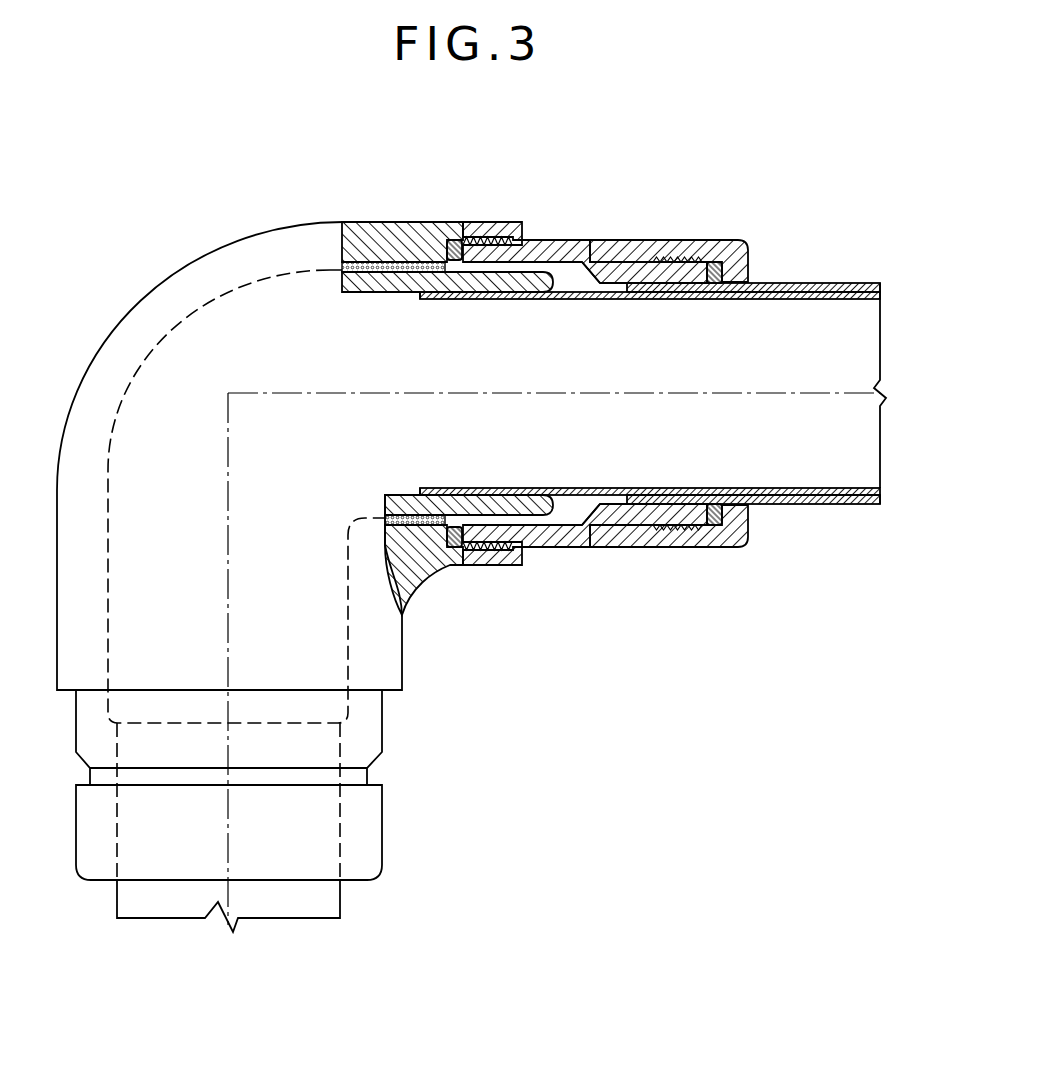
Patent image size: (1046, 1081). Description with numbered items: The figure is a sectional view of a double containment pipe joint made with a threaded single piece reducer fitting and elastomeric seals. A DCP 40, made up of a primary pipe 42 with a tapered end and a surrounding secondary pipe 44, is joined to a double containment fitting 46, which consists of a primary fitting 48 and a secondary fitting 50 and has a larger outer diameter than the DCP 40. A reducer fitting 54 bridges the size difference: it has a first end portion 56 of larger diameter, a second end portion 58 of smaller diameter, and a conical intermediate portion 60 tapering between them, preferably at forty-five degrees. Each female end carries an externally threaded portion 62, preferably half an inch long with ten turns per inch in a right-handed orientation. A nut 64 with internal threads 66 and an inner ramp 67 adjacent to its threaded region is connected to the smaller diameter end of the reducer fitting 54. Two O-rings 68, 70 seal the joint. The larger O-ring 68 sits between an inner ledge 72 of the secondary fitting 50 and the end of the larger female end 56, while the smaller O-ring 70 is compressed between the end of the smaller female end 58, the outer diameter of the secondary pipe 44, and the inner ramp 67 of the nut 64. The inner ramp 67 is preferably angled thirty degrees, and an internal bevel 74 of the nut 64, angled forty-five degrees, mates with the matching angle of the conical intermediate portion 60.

The DCP 40 is at (858, 256).
The primary pipe 42 is at (808, 488).
The secondary pipe 44 is at (830, 505).
The double containment fitting 46 is at (350, 185).
The primary fitting 48 is at (375, 298).
The secondary fitting 50 is at (497, 222).
The reducer fitting 54 is at (548, 222).
The first end portion 56 is at (535, 547).
The second end portion 58 is at (707, 530).
The conical intermediate portion 60 is at (590, 505).
The threaded portion 62 is at (483, 562).
The nut 64 is at (722, 250).
The internal threads 66 is at (668, 257).
The inner ramp 67 is at (727, 272).
The O-ring 68 is at (455, 527).
The O-ring 70 is at (718, 288).
The inner ledge 72 is at (452, 238).
The internal bevel 74 is at (590, 262).